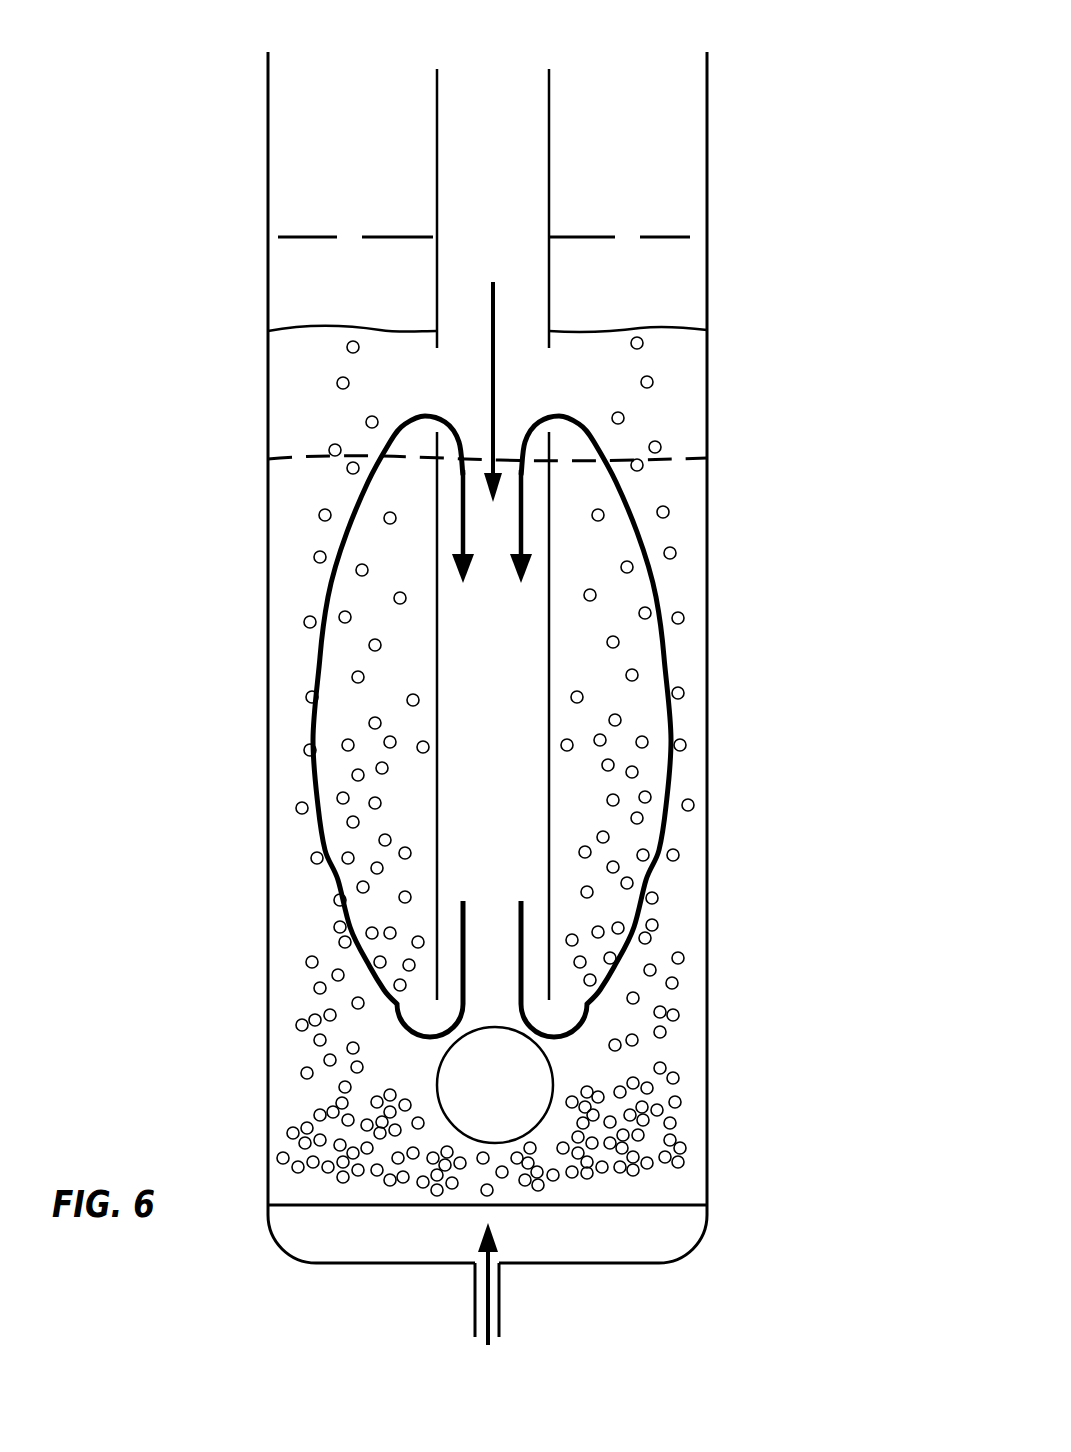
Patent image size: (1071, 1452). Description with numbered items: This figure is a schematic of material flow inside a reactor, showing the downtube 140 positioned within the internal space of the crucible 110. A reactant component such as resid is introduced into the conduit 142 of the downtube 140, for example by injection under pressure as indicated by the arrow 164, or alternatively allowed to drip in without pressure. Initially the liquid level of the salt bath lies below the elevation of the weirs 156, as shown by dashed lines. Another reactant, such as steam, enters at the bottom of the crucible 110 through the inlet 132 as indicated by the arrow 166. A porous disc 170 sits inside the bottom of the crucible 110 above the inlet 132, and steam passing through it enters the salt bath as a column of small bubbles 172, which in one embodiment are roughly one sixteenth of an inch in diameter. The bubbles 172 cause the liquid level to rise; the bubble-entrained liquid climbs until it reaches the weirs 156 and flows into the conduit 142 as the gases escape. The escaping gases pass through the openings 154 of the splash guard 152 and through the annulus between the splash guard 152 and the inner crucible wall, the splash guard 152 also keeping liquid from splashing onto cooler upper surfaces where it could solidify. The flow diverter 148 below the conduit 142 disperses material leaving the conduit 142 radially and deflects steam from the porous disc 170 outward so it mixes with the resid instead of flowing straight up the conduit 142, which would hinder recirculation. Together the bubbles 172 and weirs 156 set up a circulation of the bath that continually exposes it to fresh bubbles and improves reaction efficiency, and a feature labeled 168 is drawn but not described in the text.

The crucible 110 is at (268, 927).
The inlet 132 is at (499, 1297).
The downtube 140 is at (596, 128).
The conduit 142 is at (549, 180).
The flow diverter 148 is at (553, 1073).
The splash guard 152 is at (313, 237).
The openings 154 is at (641, 214).
The weirs 156 is at (562, 384).
The arrow 164 is at (490, 350).
The arrow 166 is at (488, 1283).
The deflector hood 168 is at (645, 541).
The porous disc 170 is at (670, 1203).
The bubbles 172 is at (314, 556).